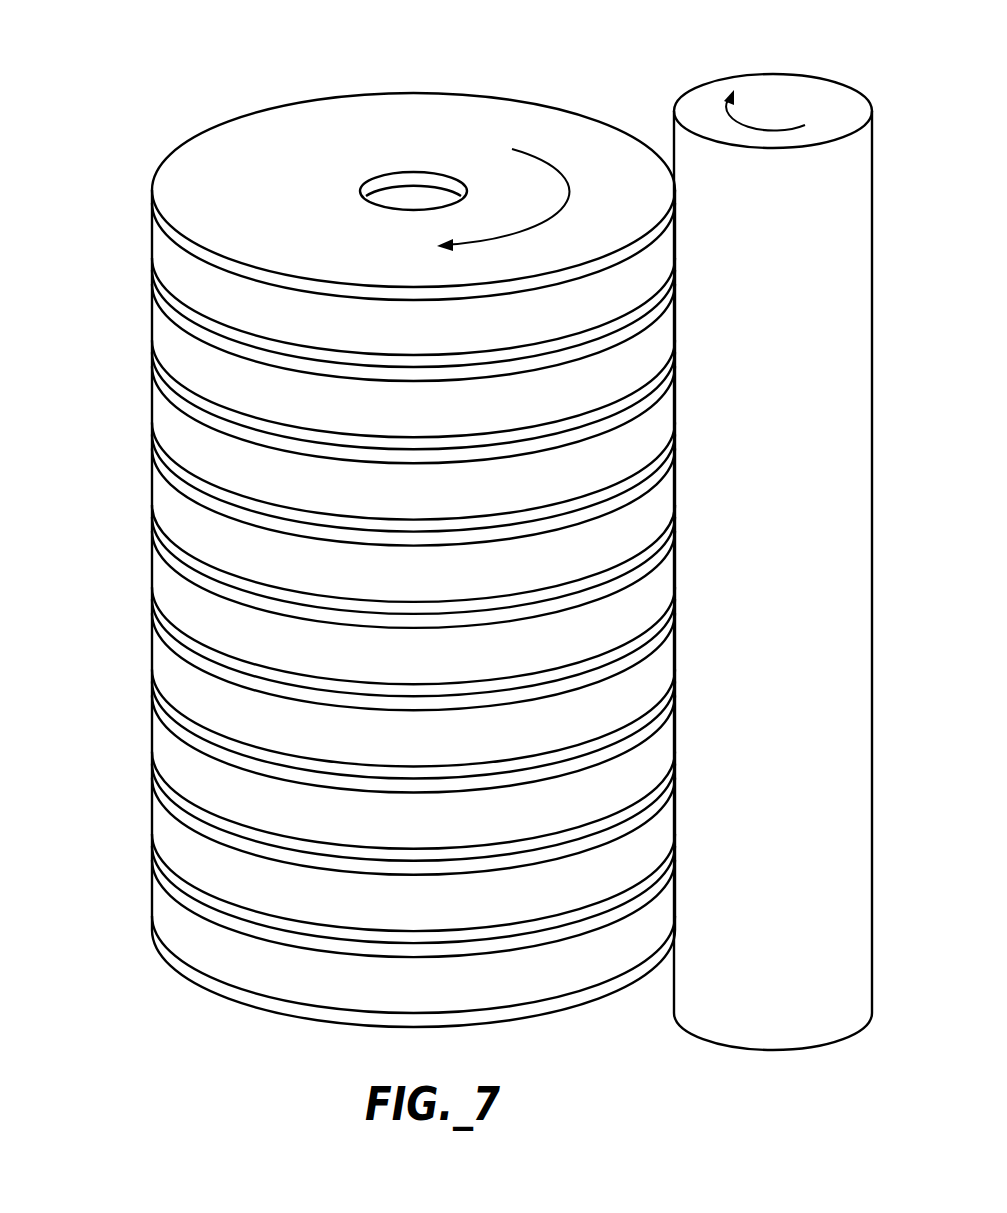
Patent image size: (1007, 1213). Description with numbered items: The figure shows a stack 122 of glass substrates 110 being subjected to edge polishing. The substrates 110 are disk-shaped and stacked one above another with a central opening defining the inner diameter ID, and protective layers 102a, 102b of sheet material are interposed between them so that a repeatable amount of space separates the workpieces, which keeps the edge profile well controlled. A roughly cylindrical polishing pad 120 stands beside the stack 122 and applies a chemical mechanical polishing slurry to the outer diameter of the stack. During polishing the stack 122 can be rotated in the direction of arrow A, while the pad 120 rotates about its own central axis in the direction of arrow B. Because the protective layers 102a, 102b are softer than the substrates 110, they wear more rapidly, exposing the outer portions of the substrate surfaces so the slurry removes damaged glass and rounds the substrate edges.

The stack 122 is at (232, 52).
The protective layer 102a is at (185, 175).
The protective layer 102b is at (158, 299).
The glass substrate 110 is at (399, 336).
The polishing pad 120 is at (780, 1052).
The inner diameter ID is at (413, 170).
The direction of stack rotation A is at (540, 157).
The direction of pad rotation B is at (767, 130).